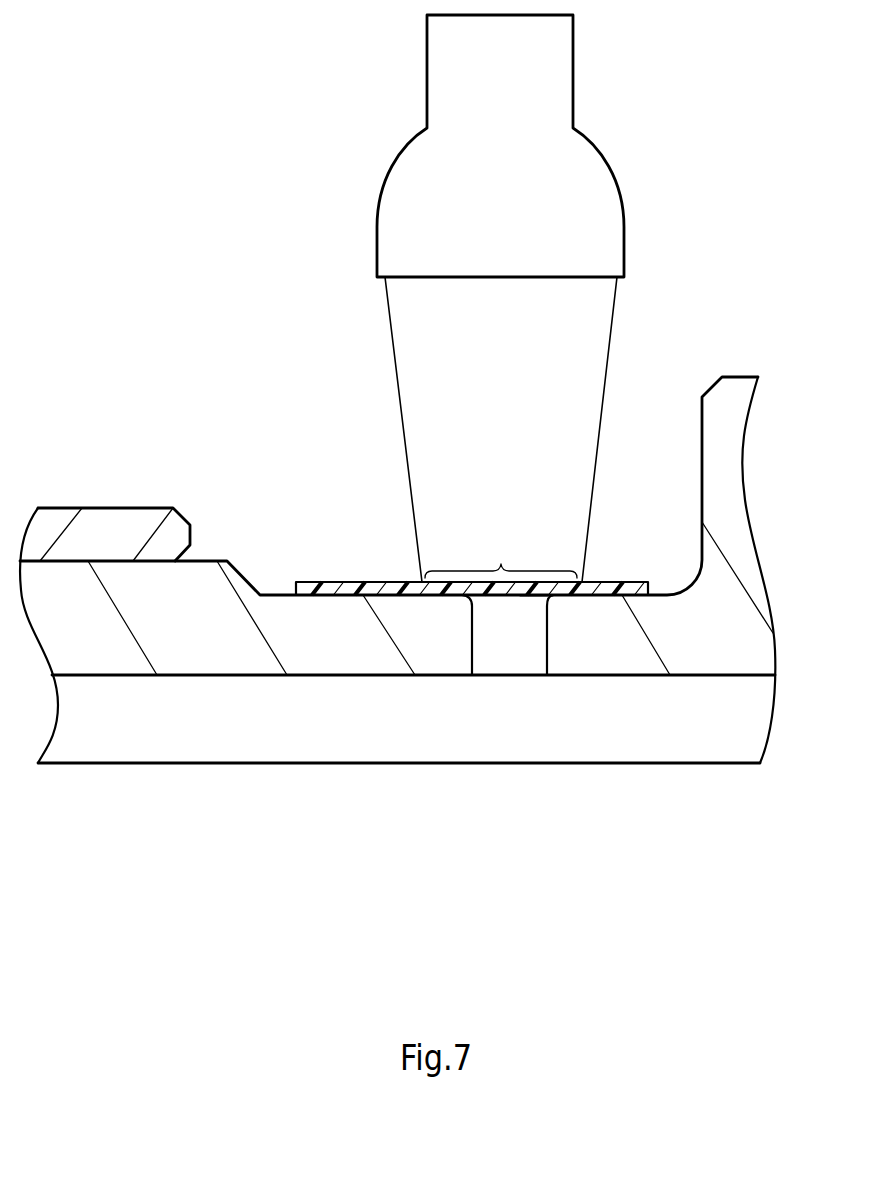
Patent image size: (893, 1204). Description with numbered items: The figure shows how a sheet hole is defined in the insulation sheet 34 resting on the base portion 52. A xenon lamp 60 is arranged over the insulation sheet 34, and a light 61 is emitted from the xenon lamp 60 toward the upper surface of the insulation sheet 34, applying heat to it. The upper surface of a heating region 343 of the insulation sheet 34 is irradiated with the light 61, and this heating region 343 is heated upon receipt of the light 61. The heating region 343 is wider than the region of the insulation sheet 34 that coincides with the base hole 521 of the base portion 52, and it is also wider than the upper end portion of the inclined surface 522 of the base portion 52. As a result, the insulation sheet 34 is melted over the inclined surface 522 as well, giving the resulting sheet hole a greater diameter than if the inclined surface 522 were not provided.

The xenon lamp 60 is at (580, 180).
The light 61 is at (453, 368).
The insulation sheet 34 is at (342, 588).
The heating region 343 is at (501, 555).
The base portion 52 is at (333, 640).
The base hole 521 is at (531, 652).
The inclined surface 522 is at (538, 600).